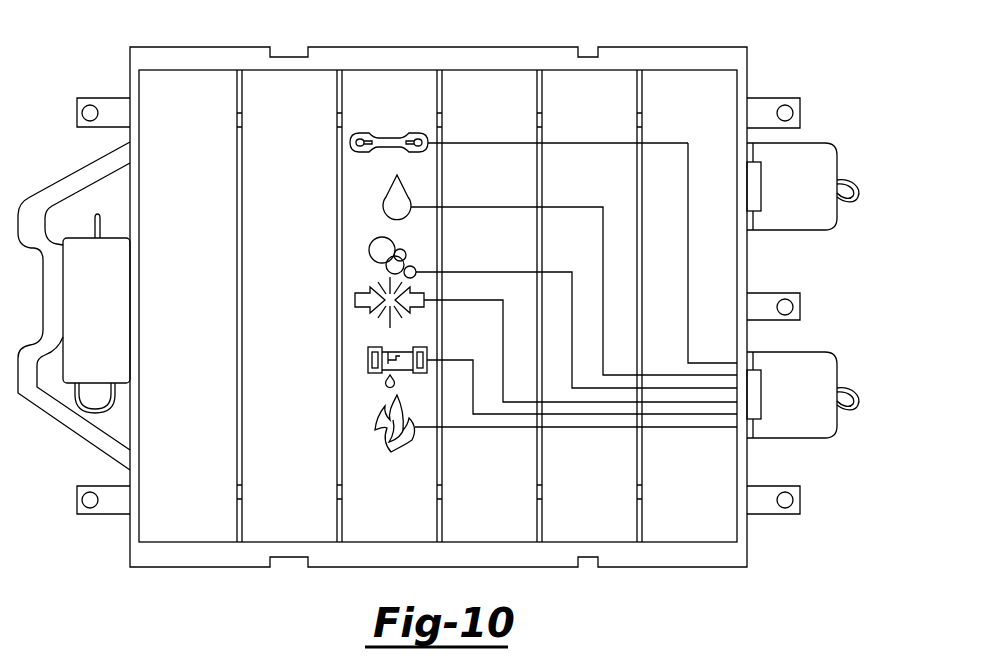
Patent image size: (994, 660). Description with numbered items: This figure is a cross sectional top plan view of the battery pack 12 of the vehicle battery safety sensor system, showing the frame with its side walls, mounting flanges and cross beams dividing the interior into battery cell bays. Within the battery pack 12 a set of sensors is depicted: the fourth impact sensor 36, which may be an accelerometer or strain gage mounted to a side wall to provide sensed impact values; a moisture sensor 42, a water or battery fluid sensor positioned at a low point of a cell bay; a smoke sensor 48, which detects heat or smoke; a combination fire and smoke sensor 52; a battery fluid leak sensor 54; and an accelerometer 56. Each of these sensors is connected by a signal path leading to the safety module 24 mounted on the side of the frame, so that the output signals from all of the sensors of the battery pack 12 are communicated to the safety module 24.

The battery pack 12 is at (790, 37).
The safety module 24 is at (813, 370).
The fourth impact sensor 36 is at (386, 133).
The moisture sensor 42 is at (383, 206).
The smoke sensor 48 is at (369, 250).
The accelerometer 56 is at (355, 300).
The battery fluid leak sensor 54 is at (368, 360).
The combination fire and smoke sensor 52 is at (377, 430).